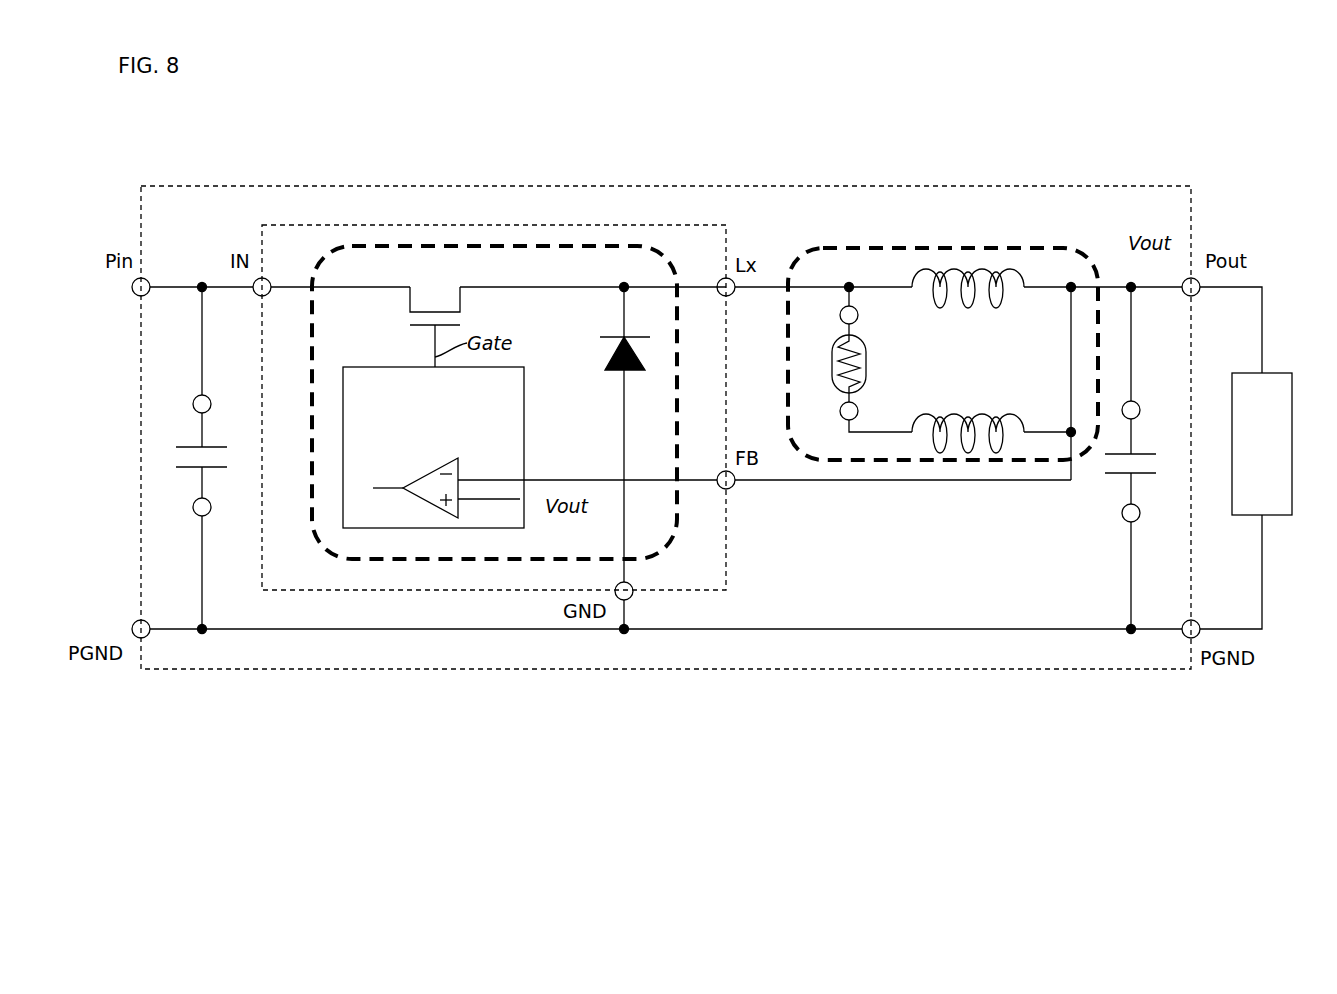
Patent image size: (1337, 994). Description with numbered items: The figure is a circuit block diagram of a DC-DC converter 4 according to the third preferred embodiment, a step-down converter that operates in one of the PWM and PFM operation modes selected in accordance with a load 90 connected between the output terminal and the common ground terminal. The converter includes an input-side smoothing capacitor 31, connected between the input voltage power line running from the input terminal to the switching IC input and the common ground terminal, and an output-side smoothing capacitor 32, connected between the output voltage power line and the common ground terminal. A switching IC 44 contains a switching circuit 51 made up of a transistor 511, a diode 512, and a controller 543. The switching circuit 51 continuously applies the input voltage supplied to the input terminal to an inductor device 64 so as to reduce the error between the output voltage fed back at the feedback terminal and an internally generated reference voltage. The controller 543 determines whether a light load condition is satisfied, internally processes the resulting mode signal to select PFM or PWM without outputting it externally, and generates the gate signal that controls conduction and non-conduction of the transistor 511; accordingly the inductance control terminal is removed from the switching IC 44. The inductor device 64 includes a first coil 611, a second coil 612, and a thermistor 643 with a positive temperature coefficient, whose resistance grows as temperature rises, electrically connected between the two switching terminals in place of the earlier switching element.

The DC-DC converter 4 is at (935, 186).
The switching IC 44 is at (427, 590).
The switching circuit 51 is at (540, 245).
The transistor 511 is at (435, 310).
The diode 512 is at (605, 337).
The controller 543 is at (560, 390).
The inductor device 64 is at (1038, 248).
The first coil 611 is at (1052, 275).
The second coil 612 is at (1052, 417).
The thermistor 643 is at (832, 390).
The input-side smoothing capacitor 31 is at (190, 468).
The output-side smoothing capacitor 32 is at (1122, 474).
The load 90 is at (1272, 372).